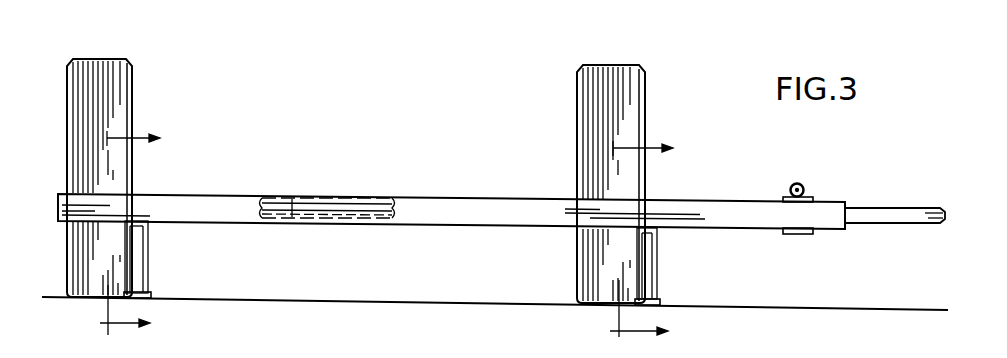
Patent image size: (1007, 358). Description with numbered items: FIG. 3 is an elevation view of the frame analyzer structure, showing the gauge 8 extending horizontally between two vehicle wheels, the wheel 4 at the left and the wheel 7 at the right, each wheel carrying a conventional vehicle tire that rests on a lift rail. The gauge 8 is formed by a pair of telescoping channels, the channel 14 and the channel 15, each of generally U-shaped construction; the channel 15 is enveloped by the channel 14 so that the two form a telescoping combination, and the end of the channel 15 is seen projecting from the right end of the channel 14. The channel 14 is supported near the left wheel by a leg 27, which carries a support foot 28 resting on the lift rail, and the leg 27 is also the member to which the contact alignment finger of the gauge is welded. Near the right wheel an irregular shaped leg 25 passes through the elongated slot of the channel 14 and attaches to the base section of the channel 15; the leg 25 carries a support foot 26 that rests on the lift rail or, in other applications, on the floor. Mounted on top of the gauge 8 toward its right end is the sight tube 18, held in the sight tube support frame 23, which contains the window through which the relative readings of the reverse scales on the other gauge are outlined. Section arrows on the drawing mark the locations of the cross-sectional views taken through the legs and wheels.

The wheel 4 is at (122, 96).
The wheel 7 is at (650, 240).
The gauge 8 is at (372, 144).
The channel 14 is at (837, 206).
The channel 15 is at (900, 210).
The sight tube 18 is at (801, 183).
The sight tube support frame 23 is at (783, 198).
The leg 25 is at (647, 263).
The support foot 26 is at (660, 300).
The leg 27 is at (138, 248).
The support foot 28 is at (150, 292).